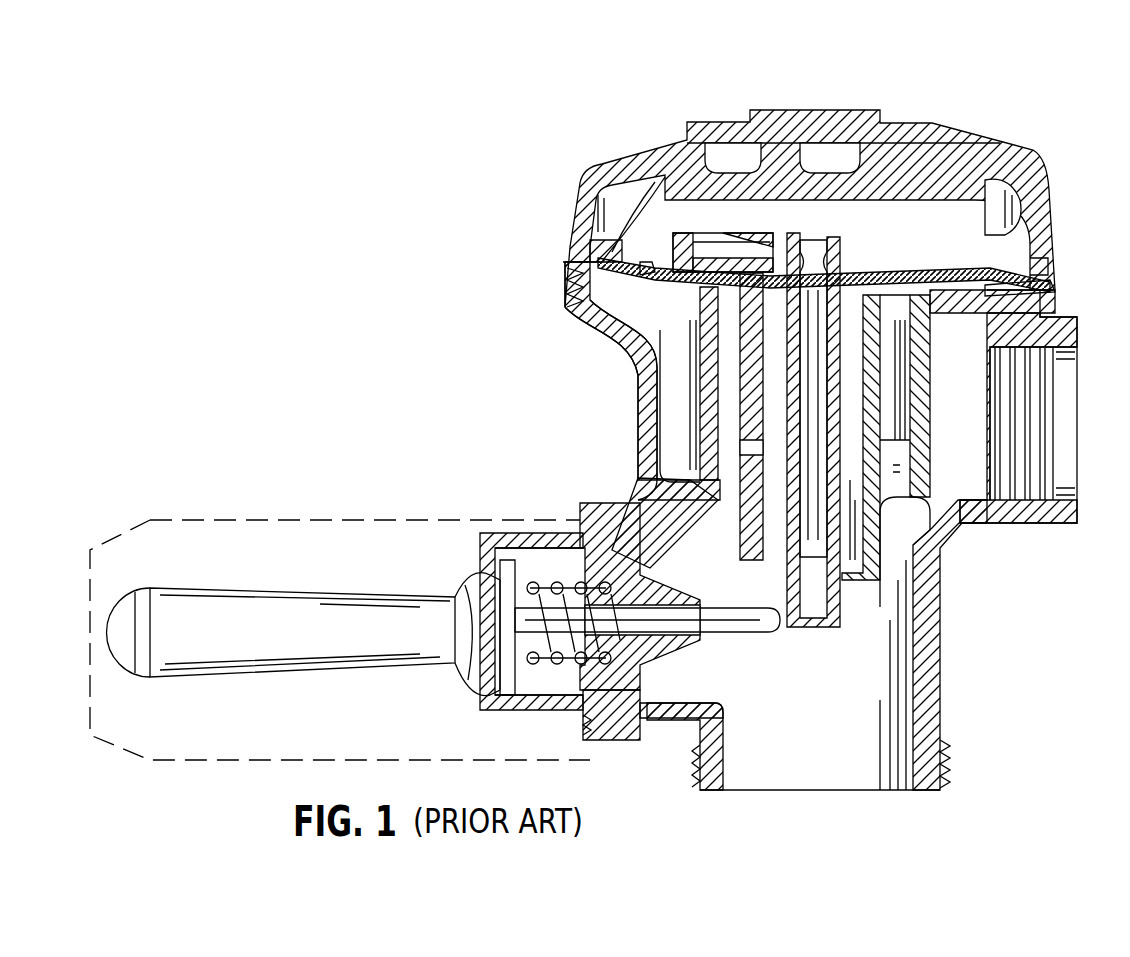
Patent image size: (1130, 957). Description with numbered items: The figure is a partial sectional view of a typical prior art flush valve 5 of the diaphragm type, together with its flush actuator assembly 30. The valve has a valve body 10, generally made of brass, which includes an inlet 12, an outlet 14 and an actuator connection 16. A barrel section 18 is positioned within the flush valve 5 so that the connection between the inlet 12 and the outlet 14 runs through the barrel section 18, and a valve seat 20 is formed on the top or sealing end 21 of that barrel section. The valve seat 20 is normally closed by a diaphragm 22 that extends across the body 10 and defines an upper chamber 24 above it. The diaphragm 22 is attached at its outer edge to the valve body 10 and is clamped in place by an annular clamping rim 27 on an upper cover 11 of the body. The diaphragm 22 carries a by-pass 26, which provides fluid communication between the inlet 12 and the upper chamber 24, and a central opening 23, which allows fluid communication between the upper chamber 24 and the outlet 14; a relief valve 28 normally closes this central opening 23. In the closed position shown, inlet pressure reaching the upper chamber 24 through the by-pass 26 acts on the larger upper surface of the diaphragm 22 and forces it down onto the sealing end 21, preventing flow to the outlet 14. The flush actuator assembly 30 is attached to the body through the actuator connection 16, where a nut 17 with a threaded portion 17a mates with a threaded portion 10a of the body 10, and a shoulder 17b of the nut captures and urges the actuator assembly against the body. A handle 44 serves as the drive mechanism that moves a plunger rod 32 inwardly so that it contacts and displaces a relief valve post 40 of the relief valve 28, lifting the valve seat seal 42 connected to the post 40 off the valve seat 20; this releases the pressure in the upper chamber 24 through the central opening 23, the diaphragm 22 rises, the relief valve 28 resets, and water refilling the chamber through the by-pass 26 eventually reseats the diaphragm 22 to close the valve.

The flush valve 5 is at (425, 181).
The valve body 10 is at (810, 548).
The threaded portion 10a is at (625, 742).
The upper cover 11 is at (592, 263).
The inlet 12 is at (1040, 410).
The outlet 14 is at (845, 795).
The actuator connection 16 is at (700, 735).
The nut 17 is at (590, 750).
The threaded portion 17a is at (675, 706).
The shoulder 17b is at (540, 713).
The barrel section 18 is at (695, 418).
The valve seat 20 is at (948, 300).
The sealing end 21 is at (672, 300).
The diaphragm 22 is at (1052, 292).
The central opening 23 is at (775, 237).
The upper chamber 24 is at (683, 212).
The by-pass 26 is at (655, 280).
The annular clamping rim 27 is at (1040, 262).
The relief valve 28 is at (905, 180).
The flush actuator assembly 30 is at (285, 520).
The plunger rod 32 is at (745, 635).
The relief valve post 40 is at (845, 620).
The valve seat seal 42 is at (845, 240).
The handle 44 is at (200, 595).